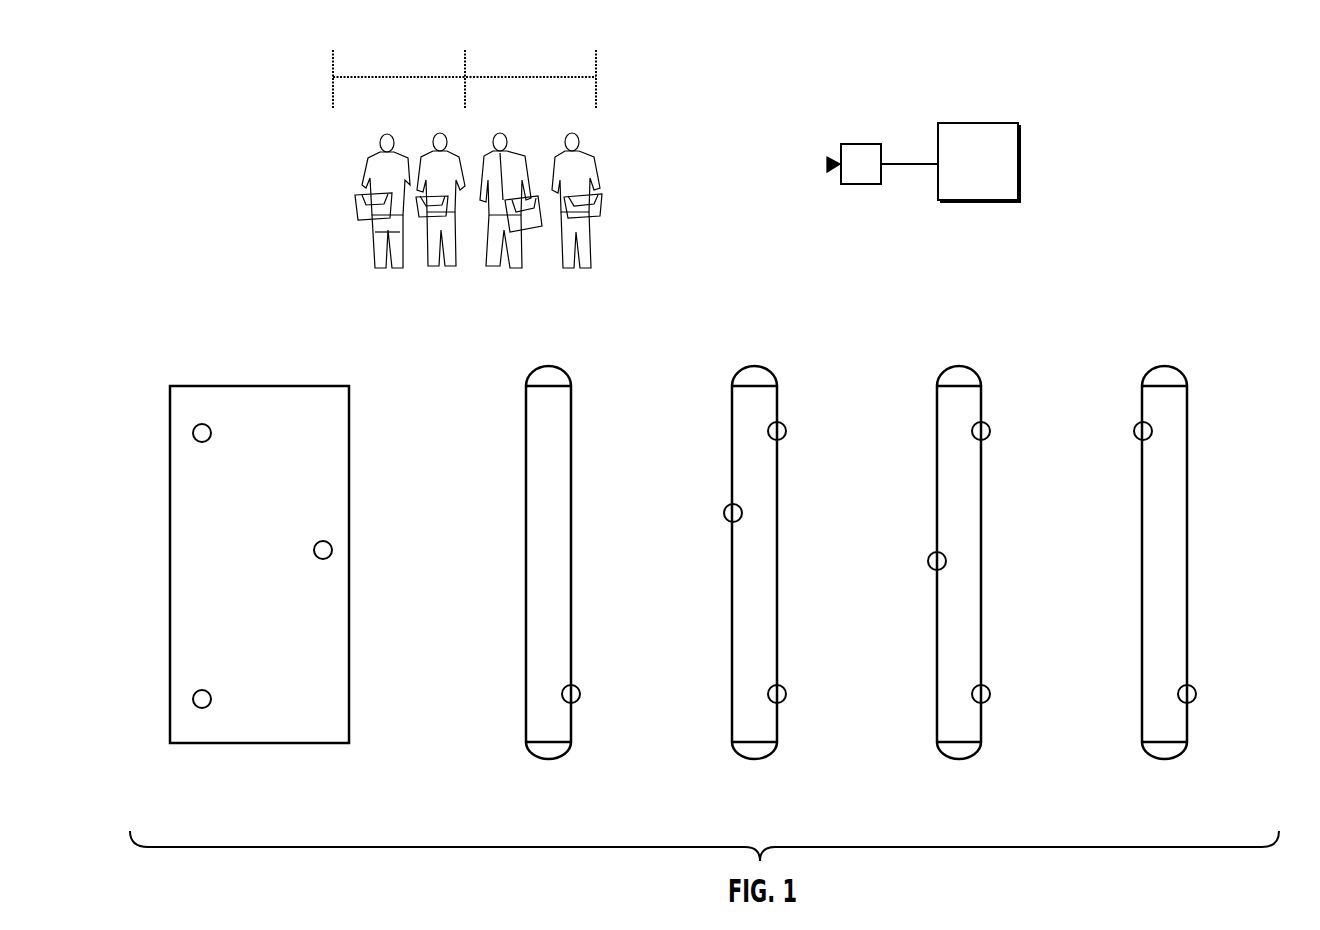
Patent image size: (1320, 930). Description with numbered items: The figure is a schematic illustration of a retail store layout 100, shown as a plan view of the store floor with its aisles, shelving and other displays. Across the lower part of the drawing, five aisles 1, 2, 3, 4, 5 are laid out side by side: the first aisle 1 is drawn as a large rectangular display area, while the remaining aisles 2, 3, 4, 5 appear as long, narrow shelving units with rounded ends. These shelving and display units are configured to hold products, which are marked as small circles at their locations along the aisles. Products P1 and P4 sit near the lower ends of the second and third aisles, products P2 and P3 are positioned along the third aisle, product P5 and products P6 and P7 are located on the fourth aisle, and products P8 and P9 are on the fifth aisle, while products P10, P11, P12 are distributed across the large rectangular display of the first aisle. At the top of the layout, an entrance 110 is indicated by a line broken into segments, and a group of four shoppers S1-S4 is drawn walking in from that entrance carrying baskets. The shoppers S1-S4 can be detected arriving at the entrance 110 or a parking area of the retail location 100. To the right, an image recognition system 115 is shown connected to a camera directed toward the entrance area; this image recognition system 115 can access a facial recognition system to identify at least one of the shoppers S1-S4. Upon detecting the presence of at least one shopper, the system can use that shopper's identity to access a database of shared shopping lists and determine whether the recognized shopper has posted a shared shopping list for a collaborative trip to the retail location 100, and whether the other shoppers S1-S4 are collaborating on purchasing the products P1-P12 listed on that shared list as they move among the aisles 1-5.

The retail store layout 100 is at (1271, 72).
The entrance 110 is at (761, 73).
The image recognition system 115 is at (996, 193).
The shoppers S1-S4 is at (610, 265).
The aisle 1 is at (309, 600).
The aisle 2 is at (599, 590).
The aisle 3 is at (798, 590).
The aisle 4 is at (1005, 590).
The aisle 5 is at (1202, 590).
The product P1 is at (580, 694).
The product P2 is at (724, 513).
The product P3 is at (786, 431).
The product P4 is at (786, 694).
The product P5 is at (928, 561).
The product P6 is at (990, 431).
The product P7 is at (990, 694).
The product P8 is at (1134, 431).
The product P9 is at (1196, 694).
The product P10 is at (193, 433).
The product P11 is at (332, 550).
The product P12 is at (193, 699).